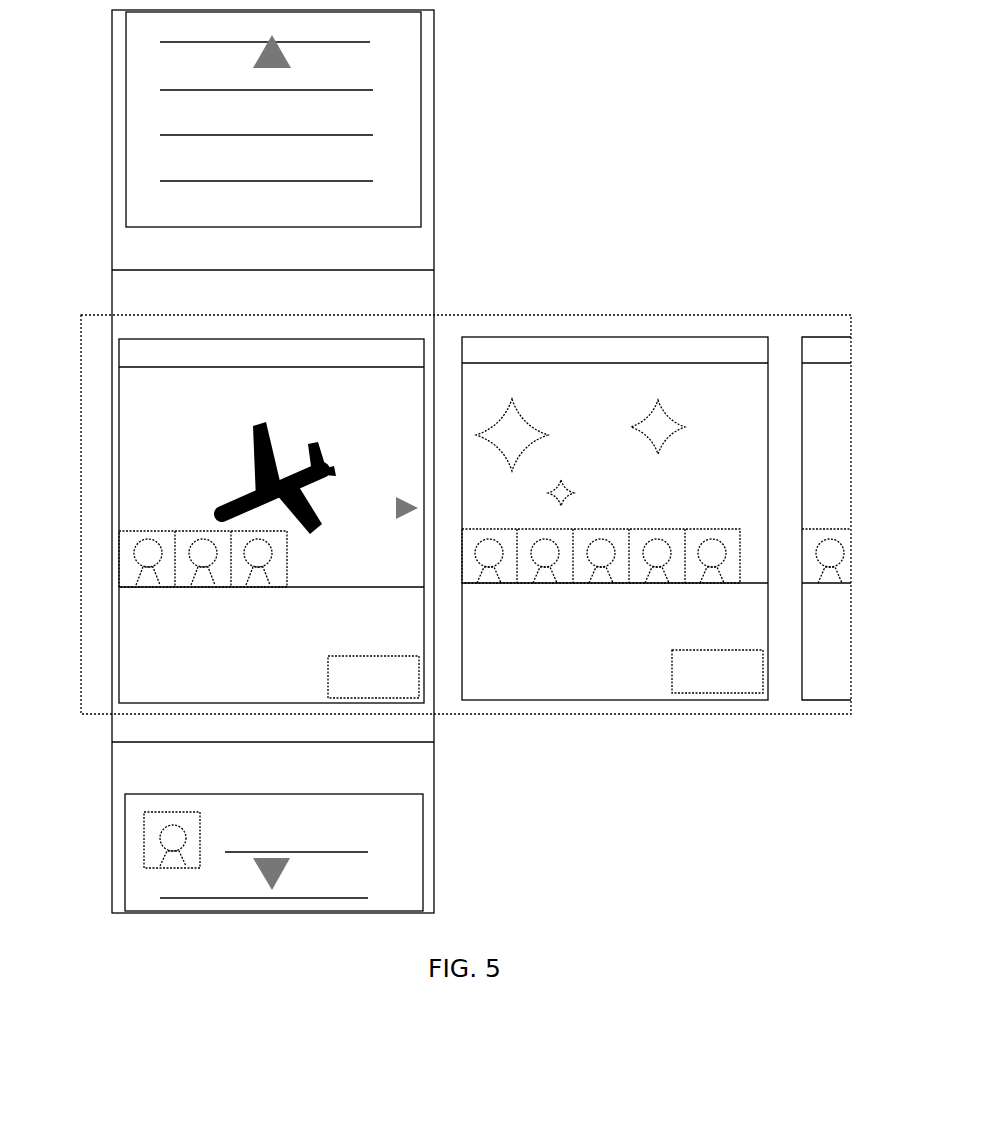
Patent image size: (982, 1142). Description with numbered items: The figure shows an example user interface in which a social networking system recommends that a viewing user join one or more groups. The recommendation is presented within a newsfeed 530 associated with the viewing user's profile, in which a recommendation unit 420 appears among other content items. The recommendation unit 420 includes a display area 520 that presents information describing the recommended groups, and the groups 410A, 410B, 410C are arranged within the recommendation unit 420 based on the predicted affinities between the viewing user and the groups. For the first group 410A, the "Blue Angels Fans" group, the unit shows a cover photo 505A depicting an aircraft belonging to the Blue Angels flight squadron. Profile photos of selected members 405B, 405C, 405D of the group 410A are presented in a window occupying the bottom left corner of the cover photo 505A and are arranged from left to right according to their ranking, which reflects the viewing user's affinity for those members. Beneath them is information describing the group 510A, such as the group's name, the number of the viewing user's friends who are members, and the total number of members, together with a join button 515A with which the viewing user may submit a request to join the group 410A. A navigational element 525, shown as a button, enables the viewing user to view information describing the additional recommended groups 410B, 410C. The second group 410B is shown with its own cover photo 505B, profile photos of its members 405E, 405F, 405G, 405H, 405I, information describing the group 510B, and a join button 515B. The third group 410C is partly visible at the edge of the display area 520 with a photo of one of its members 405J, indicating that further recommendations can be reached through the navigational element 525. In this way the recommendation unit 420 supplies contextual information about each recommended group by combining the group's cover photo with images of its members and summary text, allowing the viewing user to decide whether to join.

The newsfeed 530 is at (445, 122).
The display area 520 is at (437, 287).
The recommendation unit 420 is at (465, 315).
The group 410A is at (263, 575).
The group 410B is at (623, 510).
The group 410C is at (826, 489).
The cover photo 505A is at (160, 357).
The cover photo 505B is at (567, 363).
The member 405B is at (118, 555).
The member 405C is at (180, 592).
The member 405D is at (238, 595).
The member 405E is at (488, 588).
The member 405F is at (548, 592).
The member 405G is at (603, 529).
The member 405H is at (658, 529).
The member 405I is at (715, 529).
The member 405J is at (827, 587).
The information describing the group 510A is at (158, 692).
The information describing the group 510B is at (545, 688).
The join button 515A is at (419, 680).
The join button 515B is at (713, 698).
The navigational element 525 is at (408, 522).